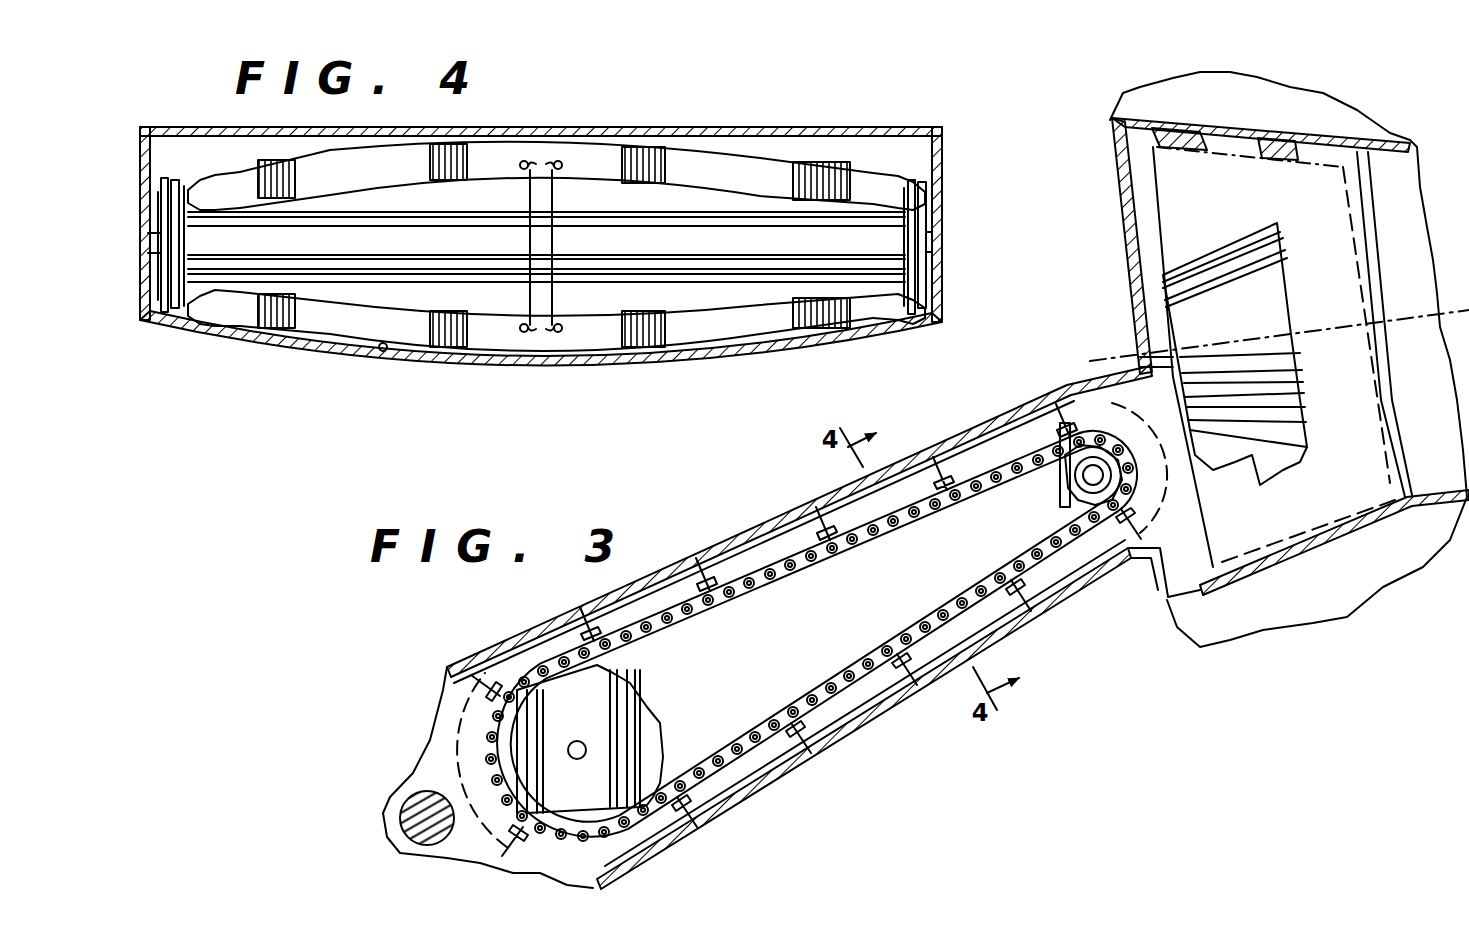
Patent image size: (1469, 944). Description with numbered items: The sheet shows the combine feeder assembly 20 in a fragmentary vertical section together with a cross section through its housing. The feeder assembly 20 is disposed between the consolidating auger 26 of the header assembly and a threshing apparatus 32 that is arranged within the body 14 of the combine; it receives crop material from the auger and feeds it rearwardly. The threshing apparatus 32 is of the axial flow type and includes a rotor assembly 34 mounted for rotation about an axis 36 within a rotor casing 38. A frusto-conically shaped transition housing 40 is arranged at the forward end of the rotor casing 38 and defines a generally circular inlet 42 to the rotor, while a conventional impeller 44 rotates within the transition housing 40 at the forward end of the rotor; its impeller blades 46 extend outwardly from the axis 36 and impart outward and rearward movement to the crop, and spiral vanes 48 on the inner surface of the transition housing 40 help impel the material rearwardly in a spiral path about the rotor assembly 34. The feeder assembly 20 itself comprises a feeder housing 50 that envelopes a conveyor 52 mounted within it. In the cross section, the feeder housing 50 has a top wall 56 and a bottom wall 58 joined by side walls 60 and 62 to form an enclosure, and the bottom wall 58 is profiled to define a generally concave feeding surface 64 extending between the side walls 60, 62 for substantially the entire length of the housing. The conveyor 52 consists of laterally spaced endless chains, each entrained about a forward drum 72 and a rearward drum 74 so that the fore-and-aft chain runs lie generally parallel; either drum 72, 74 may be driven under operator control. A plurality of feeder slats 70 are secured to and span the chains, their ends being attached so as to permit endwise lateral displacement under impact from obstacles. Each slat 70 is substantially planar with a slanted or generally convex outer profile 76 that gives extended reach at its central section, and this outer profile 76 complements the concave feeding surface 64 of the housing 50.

In FIG. 3, the body 14 is at (1347, 593).
In FIG. 3, the feeder assembly 20 is at (682, 552).
In FIG. 3, the consolidating auger 26 is at (396, 802).
In FIG. 3, the threshing apparatus 32 is at (1418, 508).
In FIG. 3, the rotor assembly 34 is at (1283, 458).
In FIG. 3, the axis 36 is at (1423, 300).
In FIG. 3, the rotor casing 38 is at (1381, 154).
In FIG. 3, the transition housing 40 is at (1333, 147).
In FIG. 3, the inlet 42 is at (1180, 570).
In FIG. 3, the impeller 44 is at (1207, 233).
In FIG. 3, the impeller blades 46 is at (1205, 240).
In FIG. 3, the spiral vanes 48 is at (1212, 130).
In FIG. 4, the feeder housing 50 is at (656, 125).
In FIG. 3, the feeder housing 50 is at (858, 737).
In FIG. 4, the conveyor 52 is at (752, 148).
In FIG. 3, the conveyor 52 is at (777, 552).
In FIG. 4, the top wall 56 is at (540, 124).
In FIG. 4, the bottom wall 58 is at (282, 352).
In FIG. 4, the side wall 60 is at (140, 206).
In FIG. 4, the side wall 62 is at (945, 268).
In FIG. 4, the feeding surface 64 is at (381, 353).
In FIG. 4, the feeder slats 70 is at (243, 172).
In FIG. 3, the feeder slats 70 is at (692, 590).
In FIG. 3, the forward drive sprocket or drum 72 is at (647, 713).
In FIG. 3, the rearward drive sprocket or drum 74 is at (1057, 496).
In FIG. 4, the outer profile 76 is at (352, 150).